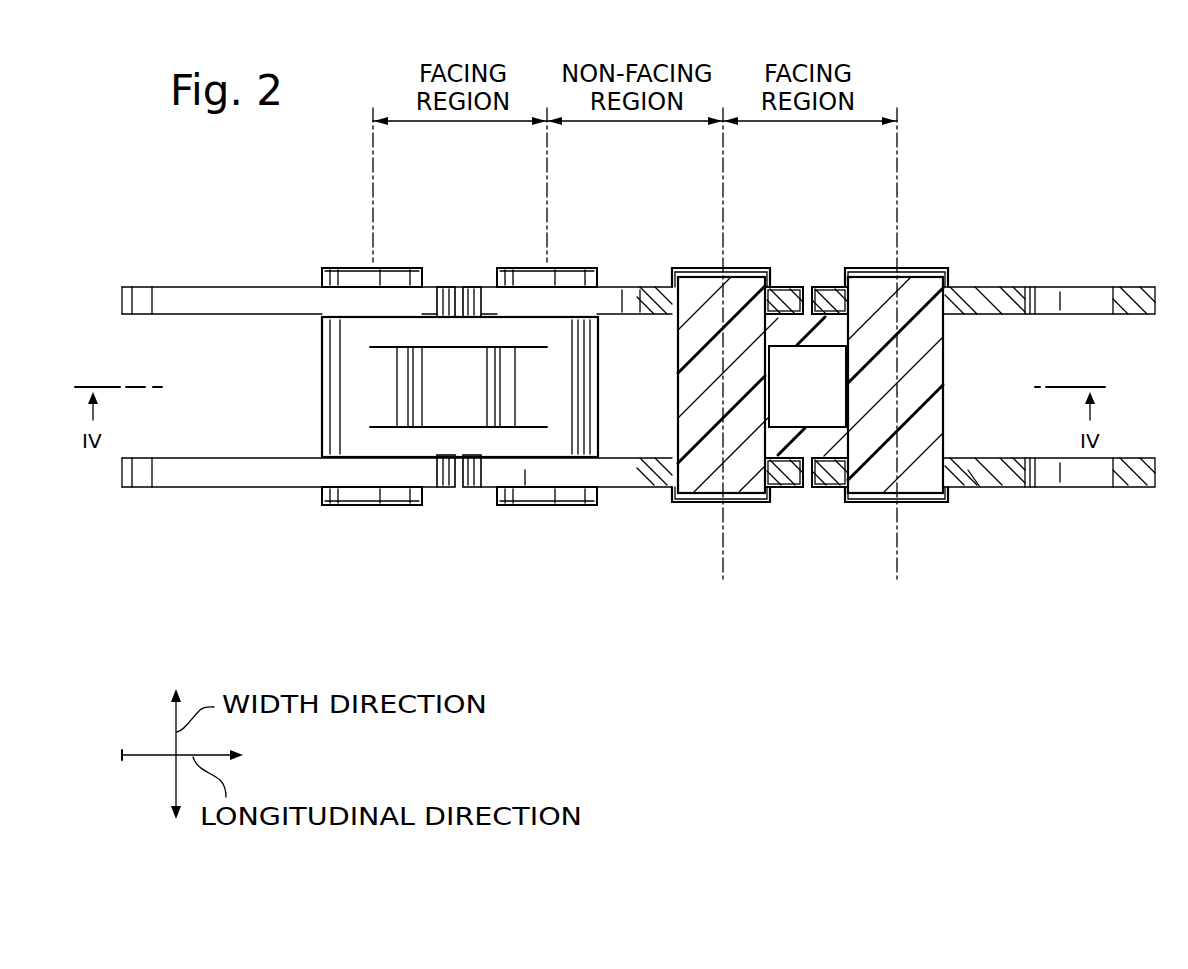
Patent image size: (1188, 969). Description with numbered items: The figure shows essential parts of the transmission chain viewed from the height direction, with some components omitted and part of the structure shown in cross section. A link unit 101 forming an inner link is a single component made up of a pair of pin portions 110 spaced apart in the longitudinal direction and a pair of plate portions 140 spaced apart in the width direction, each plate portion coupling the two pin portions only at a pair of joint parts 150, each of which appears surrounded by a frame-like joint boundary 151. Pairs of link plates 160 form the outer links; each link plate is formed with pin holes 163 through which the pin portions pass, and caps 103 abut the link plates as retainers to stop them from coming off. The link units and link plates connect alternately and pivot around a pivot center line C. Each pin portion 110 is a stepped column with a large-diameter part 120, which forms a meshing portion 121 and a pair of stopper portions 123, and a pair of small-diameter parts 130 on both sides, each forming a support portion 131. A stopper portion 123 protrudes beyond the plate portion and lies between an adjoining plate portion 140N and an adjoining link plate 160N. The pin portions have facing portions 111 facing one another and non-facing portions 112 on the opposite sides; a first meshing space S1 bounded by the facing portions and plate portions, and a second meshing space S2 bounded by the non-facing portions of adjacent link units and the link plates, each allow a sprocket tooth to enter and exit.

The link unit 101 is at (296, 432).
The cap 103 is at (563, 262).
The pin portion 110 is at (316, 345).
The facing portion 111 is at (830, 330).
The non-facing portion 112 is at (645, 312).
The large-diameter part 120 is at (566, 440).
The meshing portion 121 is at (672, 388).
The stopper portion 123 is at (478, 312).
The small-diameter part 130 is at (748, 280).
The support portion 131 is at (958, 285).
The plate portion 140 is at (483, 437).
The adjoining plate portion 140N is at (845, 335).
The joint part 150 is at (857, 507).
The joint boundary 151 is at (778, 424).
The link plate 160 is at (212, 305).
The adjoining link plate 160N is at (1013, 287).
The pin hole 163 is at (1097, 287).
The first meshing space S1 is at (440, 393).
The second meshing space S2 is at (603, 440).
The pivot center line C is at (723, 580).